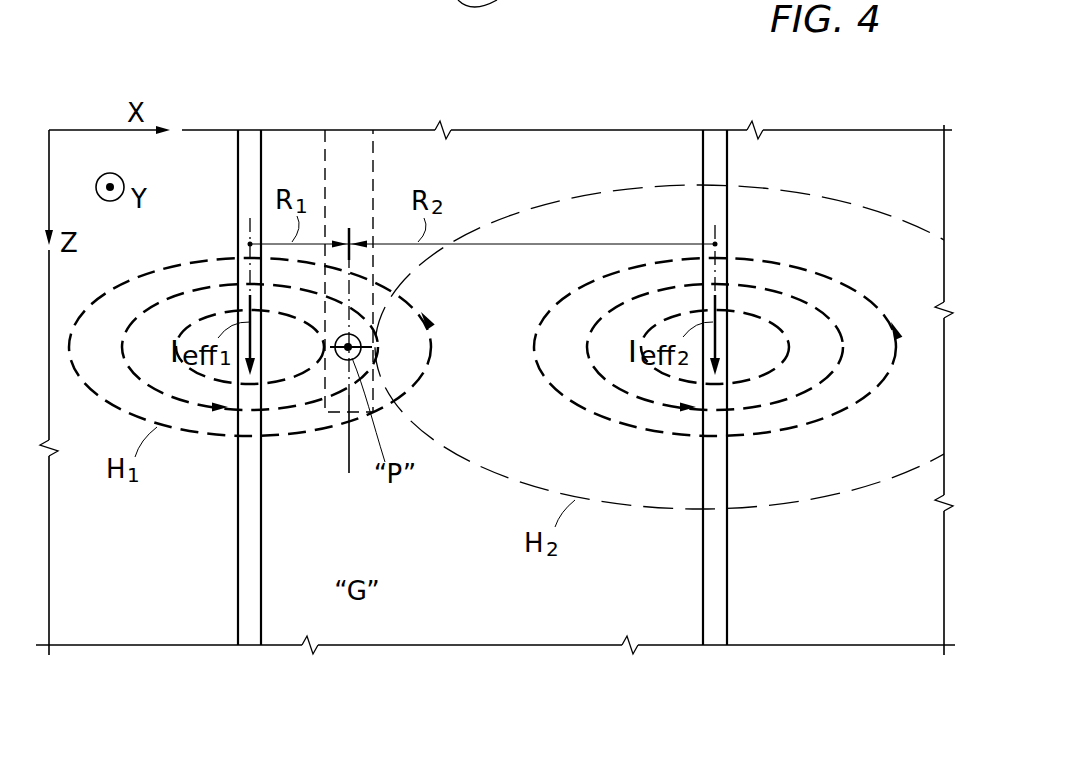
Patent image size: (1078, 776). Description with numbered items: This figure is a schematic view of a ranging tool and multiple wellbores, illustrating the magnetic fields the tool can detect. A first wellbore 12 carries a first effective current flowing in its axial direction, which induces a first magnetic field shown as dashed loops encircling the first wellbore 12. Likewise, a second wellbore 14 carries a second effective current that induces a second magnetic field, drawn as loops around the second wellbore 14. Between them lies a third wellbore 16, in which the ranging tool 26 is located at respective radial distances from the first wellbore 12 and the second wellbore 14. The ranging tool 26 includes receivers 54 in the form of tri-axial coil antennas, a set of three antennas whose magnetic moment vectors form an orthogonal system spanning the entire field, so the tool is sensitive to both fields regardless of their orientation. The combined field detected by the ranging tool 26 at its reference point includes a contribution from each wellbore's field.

The first wellbore 12 is at (250, 140).
The second wellbore 14 is at (714, 142).
The third wellbore 16 is at (356, 146).
The ranging tool 26 is at (368, 325).
The receivers 54 is at (362, 350).